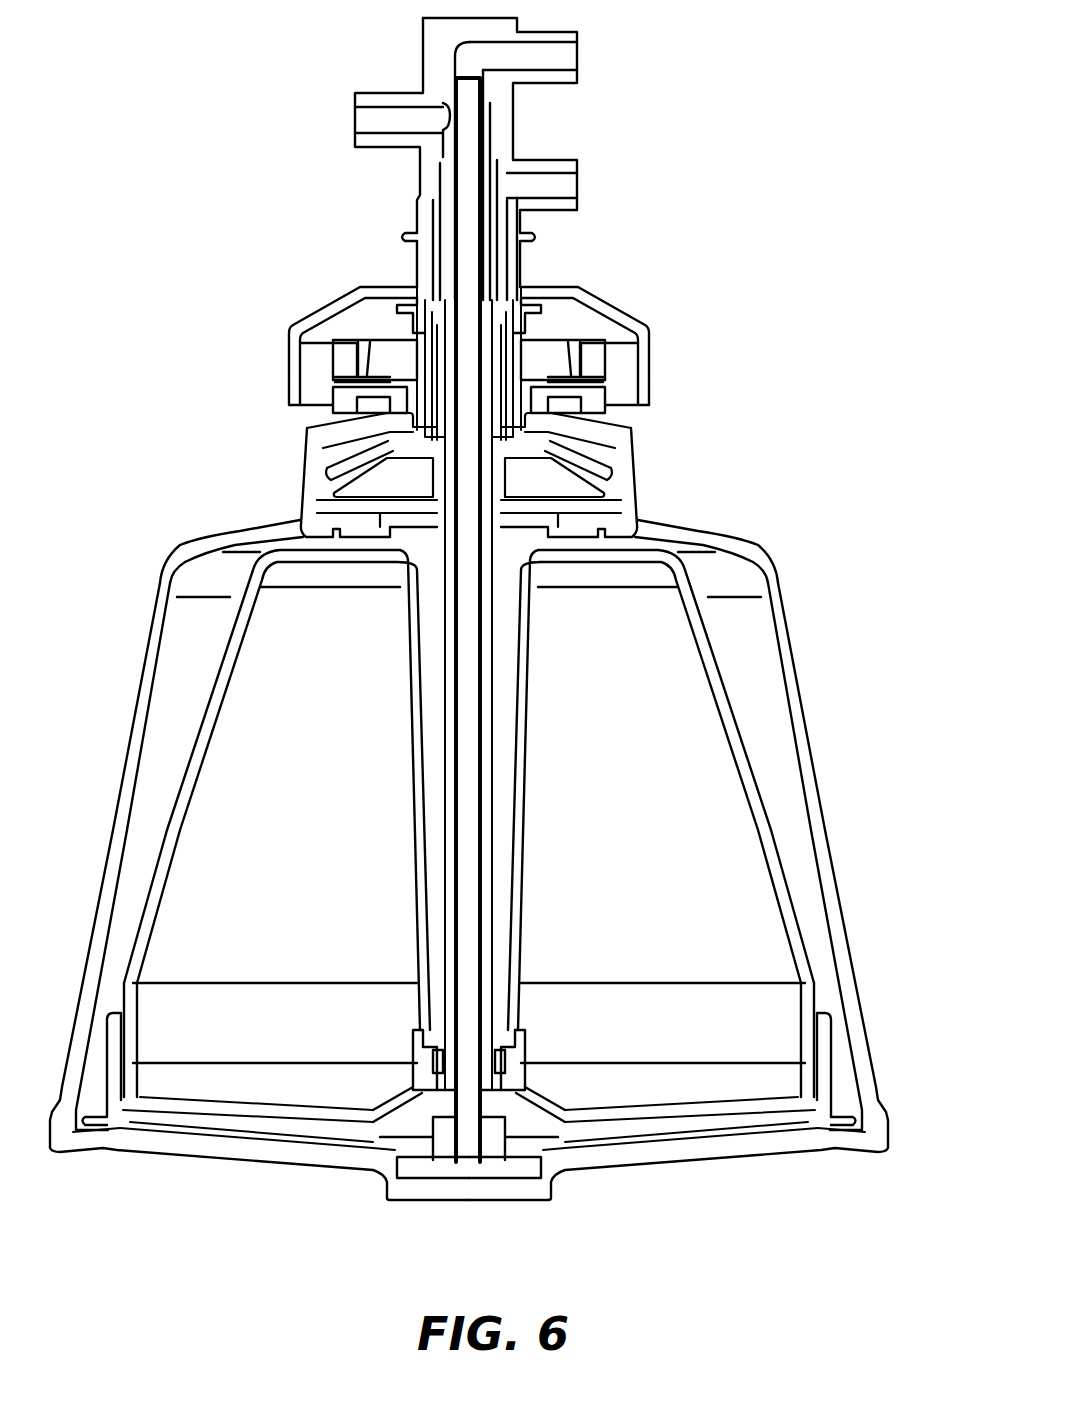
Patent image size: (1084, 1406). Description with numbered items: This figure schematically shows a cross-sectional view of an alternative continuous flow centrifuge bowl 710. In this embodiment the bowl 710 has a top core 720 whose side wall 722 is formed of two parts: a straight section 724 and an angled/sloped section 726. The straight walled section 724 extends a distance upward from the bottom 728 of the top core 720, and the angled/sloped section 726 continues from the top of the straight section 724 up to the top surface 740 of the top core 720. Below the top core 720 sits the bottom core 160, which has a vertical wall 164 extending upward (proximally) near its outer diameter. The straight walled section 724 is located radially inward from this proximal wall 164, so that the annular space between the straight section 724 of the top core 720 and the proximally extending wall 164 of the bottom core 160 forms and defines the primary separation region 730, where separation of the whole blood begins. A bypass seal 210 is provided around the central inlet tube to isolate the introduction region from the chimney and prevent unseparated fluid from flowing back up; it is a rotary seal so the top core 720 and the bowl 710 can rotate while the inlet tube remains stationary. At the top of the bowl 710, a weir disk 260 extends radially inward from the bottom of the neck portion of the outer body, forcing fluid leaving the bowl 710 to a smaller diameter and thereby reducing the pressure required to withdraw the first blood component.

The bowl 710 is at (228, 74).
The weir disk 260 is at (330, 525).
The top surface 740 is at (660, 550).
The top core 720 is at (723, 677).
The angled/sloped section 726 is at (738, 747).
The side wall 722 is at (757, 802).
The straight section 724 is at (810, 1022).
The primary separation region 730 is at (827, 1047).
The bypass seal 210 is at (503, 1073).
The bottom 728 is at (593, 1120).
The bottom core 160 is at (220, 1130).
The vertical wall 164 is at (823, 1093).